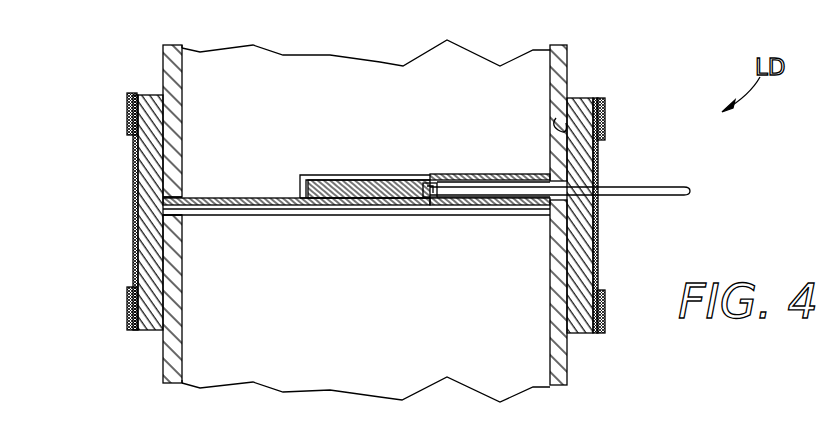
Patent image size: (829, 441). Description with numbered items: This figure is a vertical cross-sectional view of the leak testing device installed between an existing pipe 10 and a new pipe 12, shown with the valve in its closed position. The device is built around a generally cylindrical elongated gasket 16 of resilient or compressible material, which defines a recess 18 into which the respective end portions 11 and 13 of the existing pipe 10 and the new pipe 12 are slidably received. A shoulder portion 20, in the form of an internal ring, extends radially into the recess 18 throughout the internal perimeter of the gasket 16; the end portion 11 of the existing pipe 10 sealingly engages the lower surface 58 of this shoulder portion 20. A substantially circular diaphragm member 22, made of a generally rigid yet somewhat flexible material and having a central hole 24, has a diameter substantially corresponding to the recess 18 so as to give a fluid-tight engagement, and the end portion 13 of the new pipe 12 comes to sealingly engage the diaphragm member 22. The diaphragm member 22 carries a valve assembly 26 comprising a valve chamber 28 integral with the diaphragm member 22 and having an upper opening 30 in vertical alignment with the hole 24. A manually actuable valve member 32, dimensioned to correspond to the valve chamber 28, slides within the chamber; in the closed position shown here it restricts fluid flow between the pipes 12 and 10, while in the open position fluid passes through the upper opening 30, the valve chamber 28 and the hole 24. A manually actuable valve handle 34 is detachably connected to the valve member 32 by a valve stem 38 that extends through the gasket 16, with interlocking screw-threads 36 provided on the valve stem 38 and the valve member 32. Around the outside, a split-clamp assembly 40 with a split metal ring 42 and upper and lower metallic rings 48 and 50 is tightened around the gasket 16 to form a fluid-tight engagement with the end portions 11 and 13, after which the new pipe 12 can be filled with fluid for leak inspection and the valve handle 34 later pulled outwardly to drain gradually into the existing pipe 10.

The existing pipe 10 is at (568, 357).
The end portion 11 is at (183, 262).
The new pipe 12 is at (568, 66).
The end portion 13 is at (185, 135).
The gasket 16 is at (148, 95).
The recess 18 is at (598, 143).
The shoulder portion 20 is at (568, 227).
The diaphragm member 22 is at (241, 197).
The central hole 24 is at (372, 210).
The valve assembly 26 is at (412, 103).
The valve chamber 28 is at (473, 172).
The upper opening 30 is at (333, 172).
The valve member 32 is at (378, 172).
The valve handle 34 is at (688, 190).
The interlocking screw-threads 36 is at (427, 210).
The valve stem 38 is at (507, 213).
The split-clamp assembly 40 is at (131, 186).
The metal ring 42 is at (133, 245).
The upper metallic ring 48 is at (128, 118).
The lower metallic ring 50 is at (127, 313).
The lower surface 58 is at (182, 218).